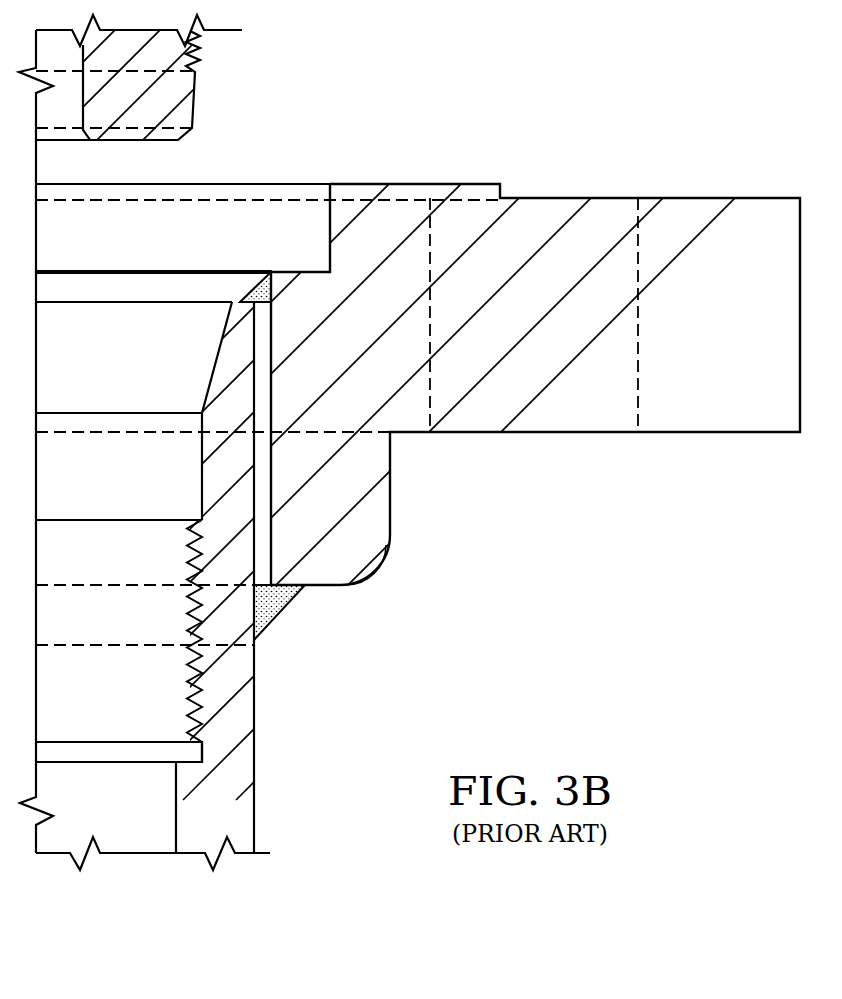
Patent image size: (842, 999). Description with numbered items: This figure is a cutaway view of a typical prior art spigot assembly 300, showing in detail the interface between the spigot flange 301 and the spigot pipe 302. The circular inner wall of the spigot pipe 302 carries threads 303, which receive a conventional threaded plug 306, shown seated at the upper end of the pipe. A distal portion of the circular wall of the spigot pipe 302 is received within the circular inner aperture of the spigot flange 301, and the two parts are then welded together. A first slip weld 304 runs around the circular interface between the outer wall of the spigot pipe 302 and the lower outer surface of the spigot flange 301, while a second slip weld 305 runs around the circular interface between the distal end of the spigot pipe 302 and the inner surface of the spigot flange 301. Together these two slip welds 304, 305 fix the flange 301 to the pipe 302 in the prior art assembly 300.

The spigot assembly 300 is at (421, 435).
The spigot flange 301 is at (543, 433).
The spigot pipe 302 is at (255, 755).
The threads 303 is at (195, 692).
The first slip weld 304 is at (287, 613).
The second slip weld 305 is at (250, 288).
The threaded plug 306 is at (195, 85).